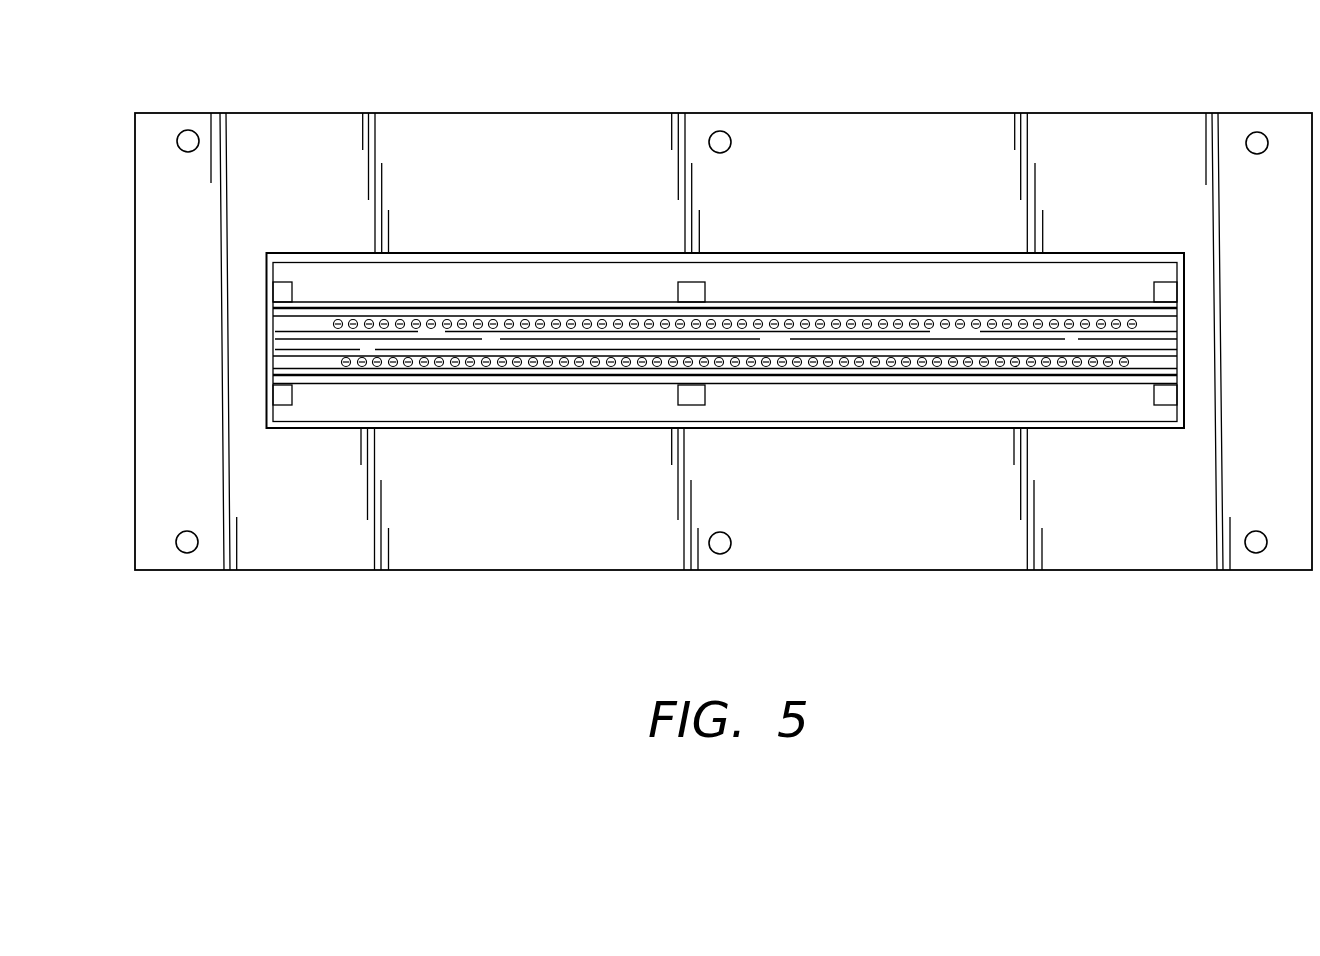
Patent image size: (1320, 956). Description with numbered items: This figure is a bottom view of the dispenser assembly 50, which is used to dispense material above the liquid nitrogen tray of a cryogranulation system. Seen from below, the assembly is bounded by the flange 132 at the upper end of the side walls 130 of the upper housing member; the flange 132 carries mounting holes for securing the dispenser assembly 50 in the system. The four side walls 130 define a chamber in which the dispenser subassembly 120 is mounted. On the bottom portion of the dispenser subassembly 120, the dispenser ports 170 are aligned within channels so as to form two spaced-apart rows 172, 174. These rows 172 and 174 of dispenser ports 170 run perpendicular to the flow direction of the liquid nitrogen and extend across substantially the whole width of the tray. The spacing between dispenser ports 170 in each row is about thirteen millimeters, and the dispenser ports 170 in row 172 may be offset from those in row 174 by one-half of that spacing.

The dispenser assembly 50 is at (785, 103).
The flange 132 is at (477, 111).
The side walls 130 is at (267, 297).
The dispenser subassembly 120 is at (641, 300).
The row of dispenser ports 172 is at (898, 313).
The row of dispenser ports 174 is at (903, 375).
The dispenser ports 170 is at (997, 327).